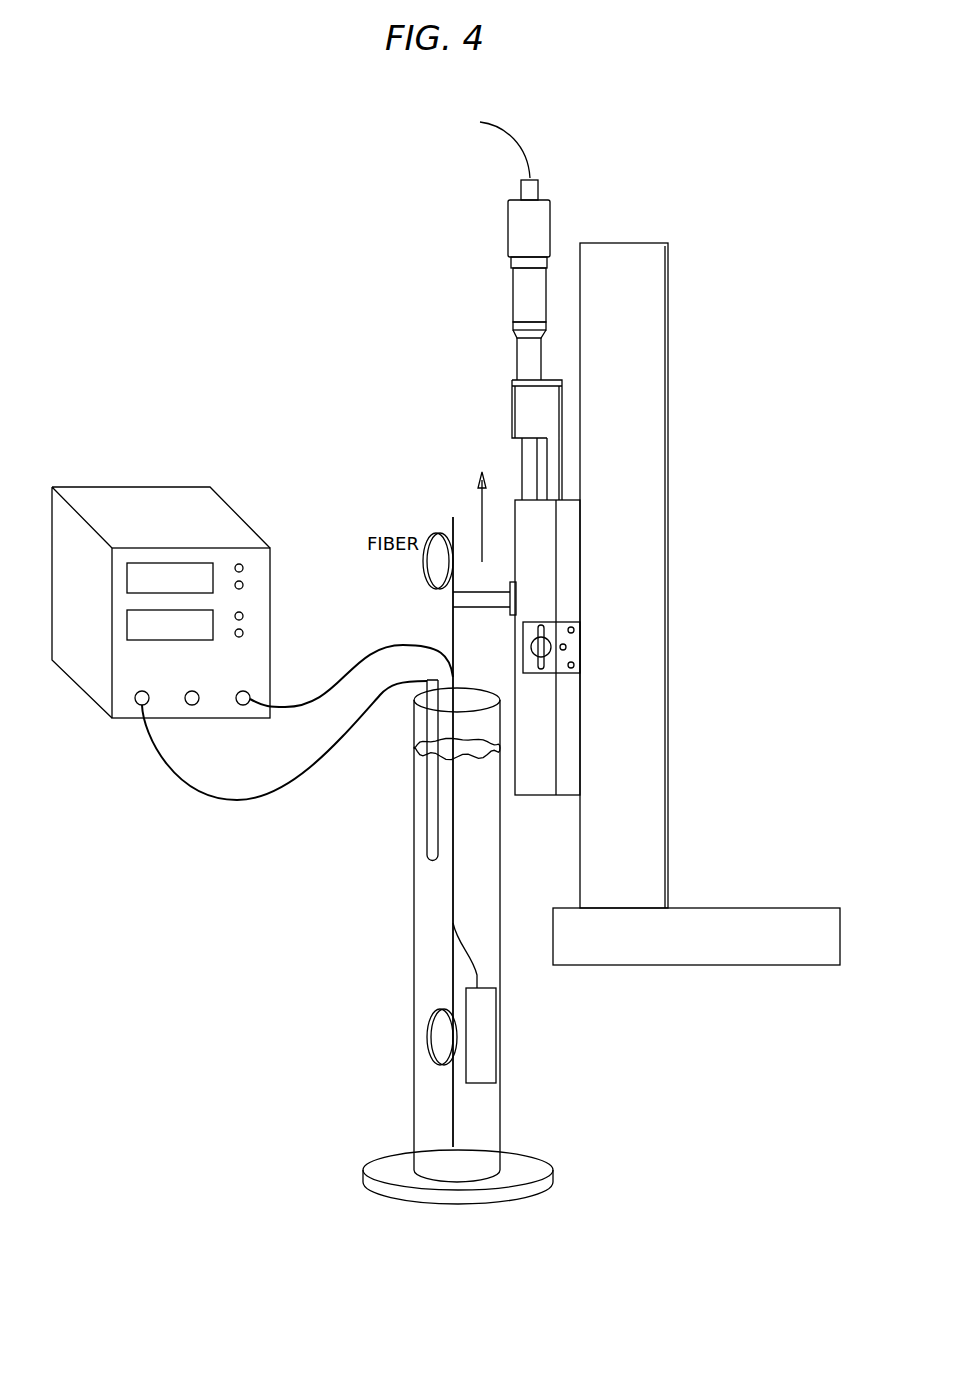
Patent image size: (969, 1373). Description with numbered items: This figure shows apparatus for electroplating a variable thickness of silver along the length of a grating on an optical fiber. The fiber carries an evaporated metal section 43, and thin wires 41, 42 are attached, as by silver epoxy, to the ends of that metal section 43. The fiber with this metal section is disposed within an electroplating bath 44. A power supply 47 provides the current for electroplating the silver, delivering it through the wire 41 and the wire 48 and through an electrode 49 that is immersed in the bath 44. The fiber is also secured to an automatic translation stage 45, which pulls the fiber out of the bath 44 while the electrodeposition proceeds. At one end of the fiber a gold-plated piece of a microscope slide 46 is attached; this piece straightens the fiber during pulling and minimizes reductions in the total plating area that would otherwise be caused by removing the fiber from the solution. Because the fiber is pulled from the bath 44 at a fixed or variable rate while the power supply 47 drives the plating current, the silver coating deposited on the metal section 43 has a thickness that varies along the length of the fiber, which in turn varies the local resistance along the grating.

The thin wire 41 is at (310, 692).
The thin wire 42 is at (472, 960).
The evaporated metal section 43 is at (450, 888).
The electroplating bath 44 is at (437, 975).
The automatic translation stage 45 is at (517, 367).
The gold-plated piece of a microscope slide 46 is at (487, 1027).
The power supply 47 is at (93, 703).
The wire 48 is at (220, 797).
The electrode 49 is at (422, 809).